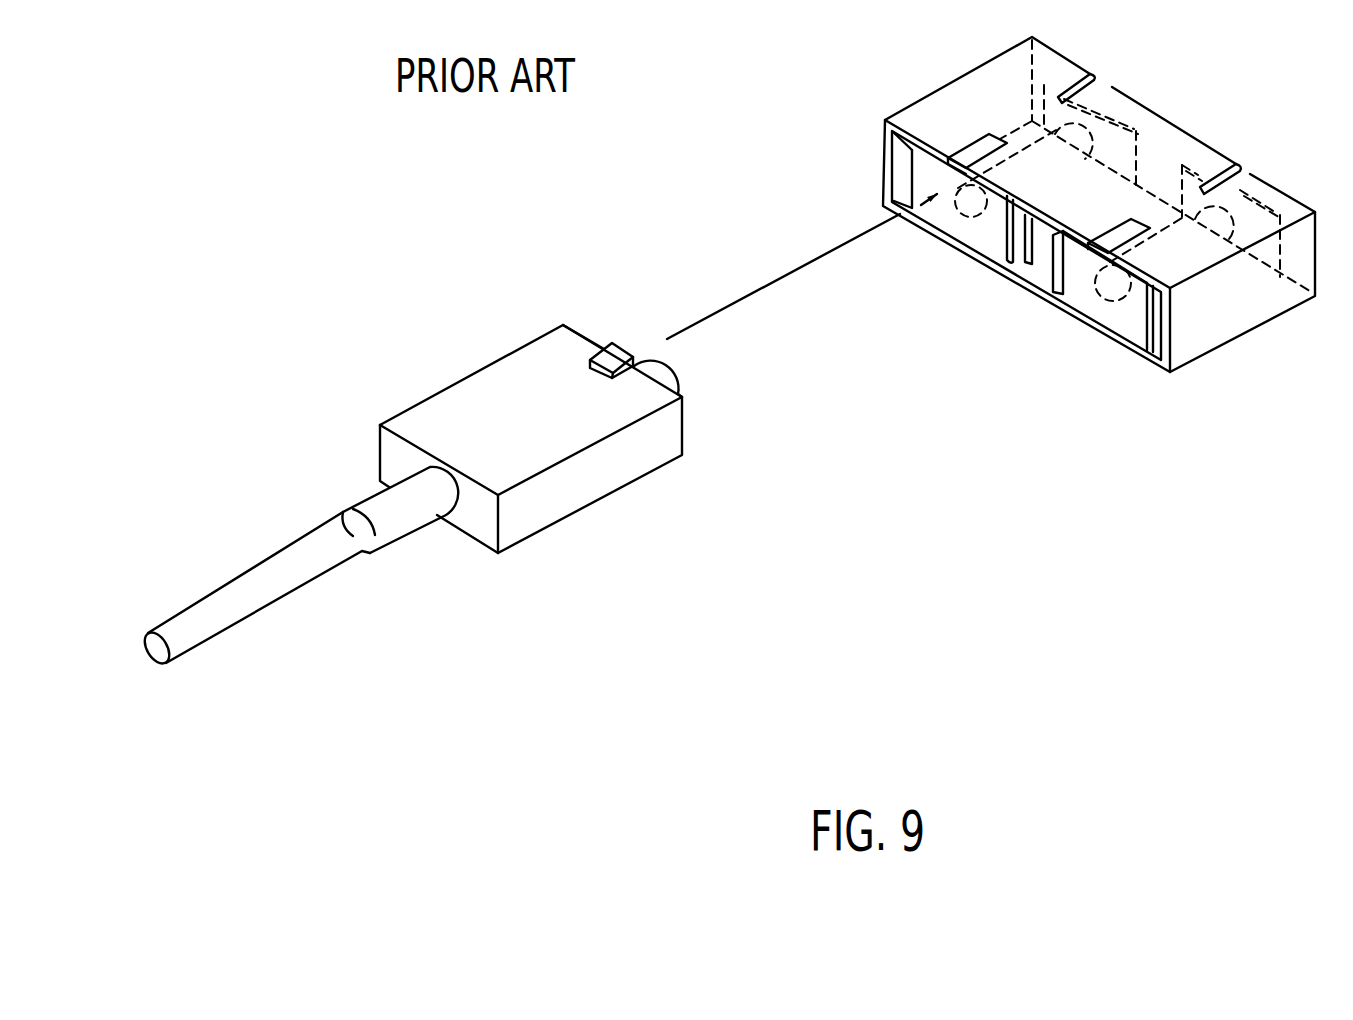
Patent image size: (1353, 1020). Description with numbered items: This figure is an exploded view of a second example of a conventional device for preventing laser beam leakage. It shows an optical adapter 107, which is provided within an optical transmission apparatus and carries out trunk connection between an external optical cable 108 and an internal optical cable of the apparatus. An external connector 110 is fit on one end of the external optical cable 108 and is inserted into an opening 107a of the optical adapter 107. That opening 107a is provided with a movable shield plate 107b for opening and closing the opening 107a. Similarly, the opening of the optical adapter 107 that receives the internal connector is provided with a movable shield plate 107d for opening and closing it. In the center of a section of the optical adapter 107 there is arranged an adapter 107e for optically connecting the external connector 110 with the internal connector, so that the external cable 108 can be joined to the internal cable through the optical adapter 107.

The optical adapter 107 is at (1216, 336).
The opening 107a is at (893, 185).
The movable shield plate 107b is at (997, 245).
The movable shield plate 107d is at (1123, 120).
The adapter 107e is at (1043, 168).
The external optical cable 108 is at (295, 560).
The external connector 110 is at (512, 377).